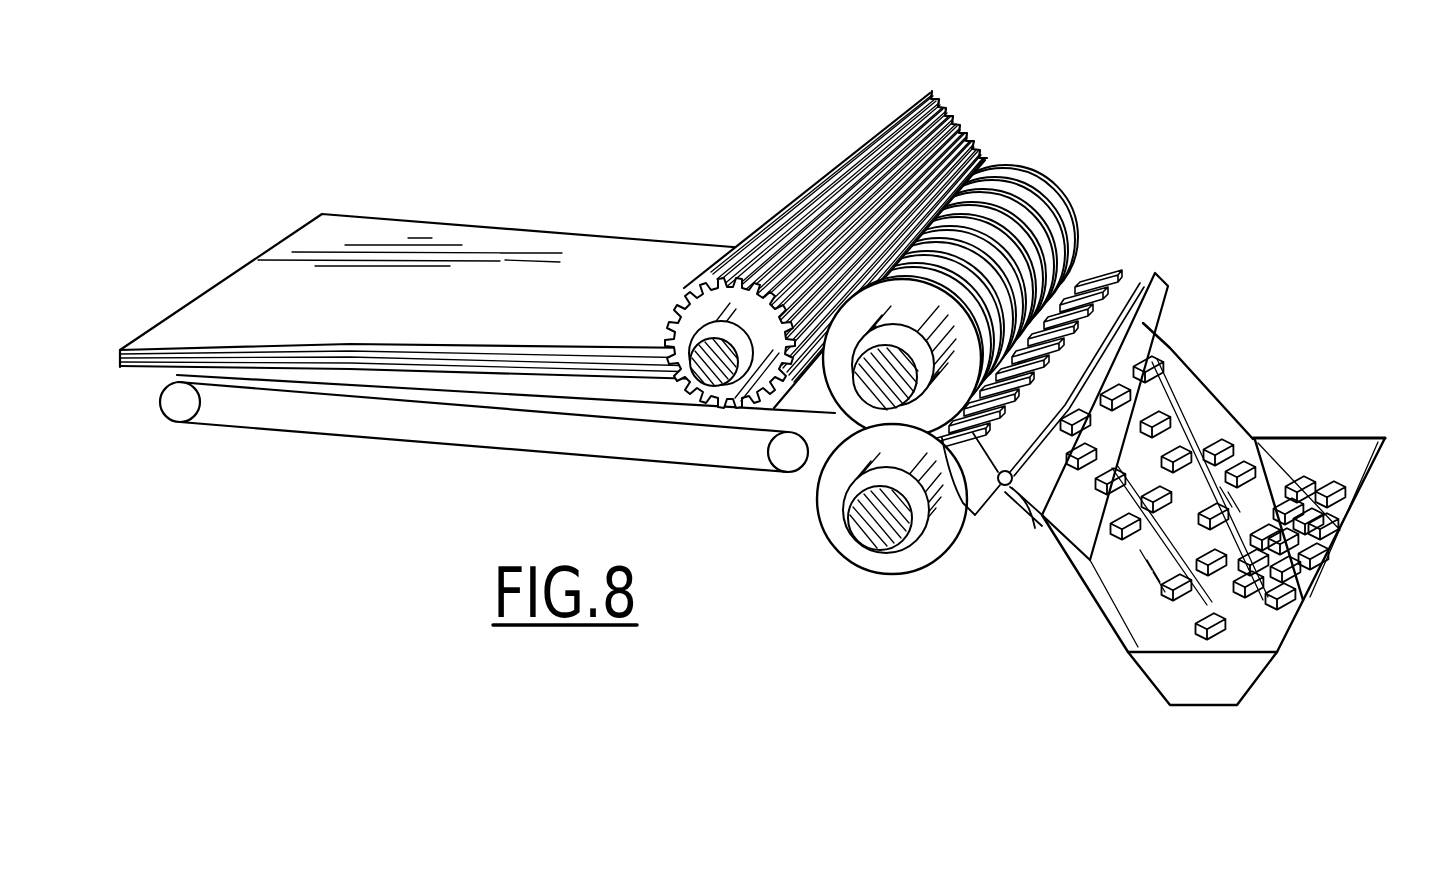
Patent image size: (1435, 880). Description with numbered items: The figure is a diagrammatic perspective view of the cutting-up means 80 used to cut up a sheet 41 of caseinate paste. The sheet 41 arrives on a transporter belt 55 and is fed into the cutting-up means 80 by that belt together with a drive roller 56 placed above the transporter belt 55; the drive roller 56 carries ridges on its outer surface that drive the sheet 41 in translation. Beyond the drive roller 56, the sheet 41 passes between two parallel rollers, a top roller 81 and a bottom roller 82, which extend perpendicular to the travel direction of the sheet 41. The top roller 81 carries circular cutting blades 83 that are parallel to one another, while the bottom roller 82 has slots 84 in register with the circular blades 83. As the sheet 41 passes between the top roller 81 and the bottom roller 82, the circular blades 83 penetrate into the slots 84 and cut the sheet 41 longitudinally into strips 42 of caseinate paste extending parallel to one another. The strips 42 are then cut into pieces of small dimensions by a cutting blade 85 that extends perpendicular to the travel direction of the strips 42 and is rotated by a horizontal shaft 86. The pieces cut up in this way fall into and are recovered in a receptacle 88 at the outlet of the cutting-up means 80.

The sheet 41 is at (385, 243).
The strips 42 is at (1098, 272).
The transporter belt 55 is at (475, 447).
The drive roller 56 is at (928, 95).
The cutting-up means 80 is at (1158, 155).
The top roller 81 is at (860, 393).
The bottom roller 82 is at (872, 538).
The circular cutting blades 83 is at (1075, 252).
The slots 84 is at (1000, 500).
The cutting blade 85 is at (1150, 300).
The horizontal shaft 86 is at (1007, 486).
The receptacle 88 is at (1212, 675).